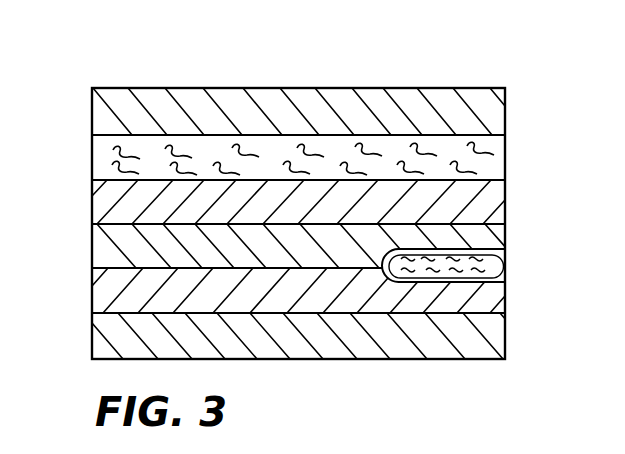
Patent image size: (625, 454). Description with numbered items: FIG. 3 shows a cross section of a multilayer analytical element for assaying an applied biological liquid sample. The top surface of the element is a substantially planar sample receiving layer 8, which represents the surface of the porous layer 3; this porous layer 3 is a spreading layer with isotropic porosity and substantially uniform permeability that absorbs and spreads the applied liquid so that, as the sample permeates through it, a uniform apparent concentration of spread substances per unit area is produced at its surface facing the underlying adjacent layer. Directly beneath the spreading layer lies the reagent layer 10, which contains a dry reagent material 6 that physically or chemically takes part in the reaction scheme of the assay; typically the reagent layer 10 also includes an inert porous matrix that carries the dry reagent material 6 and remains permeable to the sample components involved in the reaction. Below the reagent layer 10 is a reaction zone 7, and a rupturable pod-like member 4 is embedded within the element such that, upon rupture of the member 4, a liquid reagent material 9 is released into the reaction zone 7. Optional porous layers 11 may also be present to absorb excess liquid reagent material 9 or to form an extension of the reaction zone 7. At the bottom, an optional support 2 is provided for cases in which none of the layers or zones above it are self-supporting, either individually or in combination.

The support 2 is at (92, 338).
The porous layer 3 is at (506, 105).
The rupturable pod-like member 4 is at (506, 278).
The dry reagent material 6 is at (106, 157).
The reaction zone 7 is at (92, 205).
The sample receiving layer 8 is at (352, 88).
The liquid reagent material 9 is at (488, 259).
The reagent layer 10 is at (506, 152).
The optional porous layer 11 is at (92, 282).